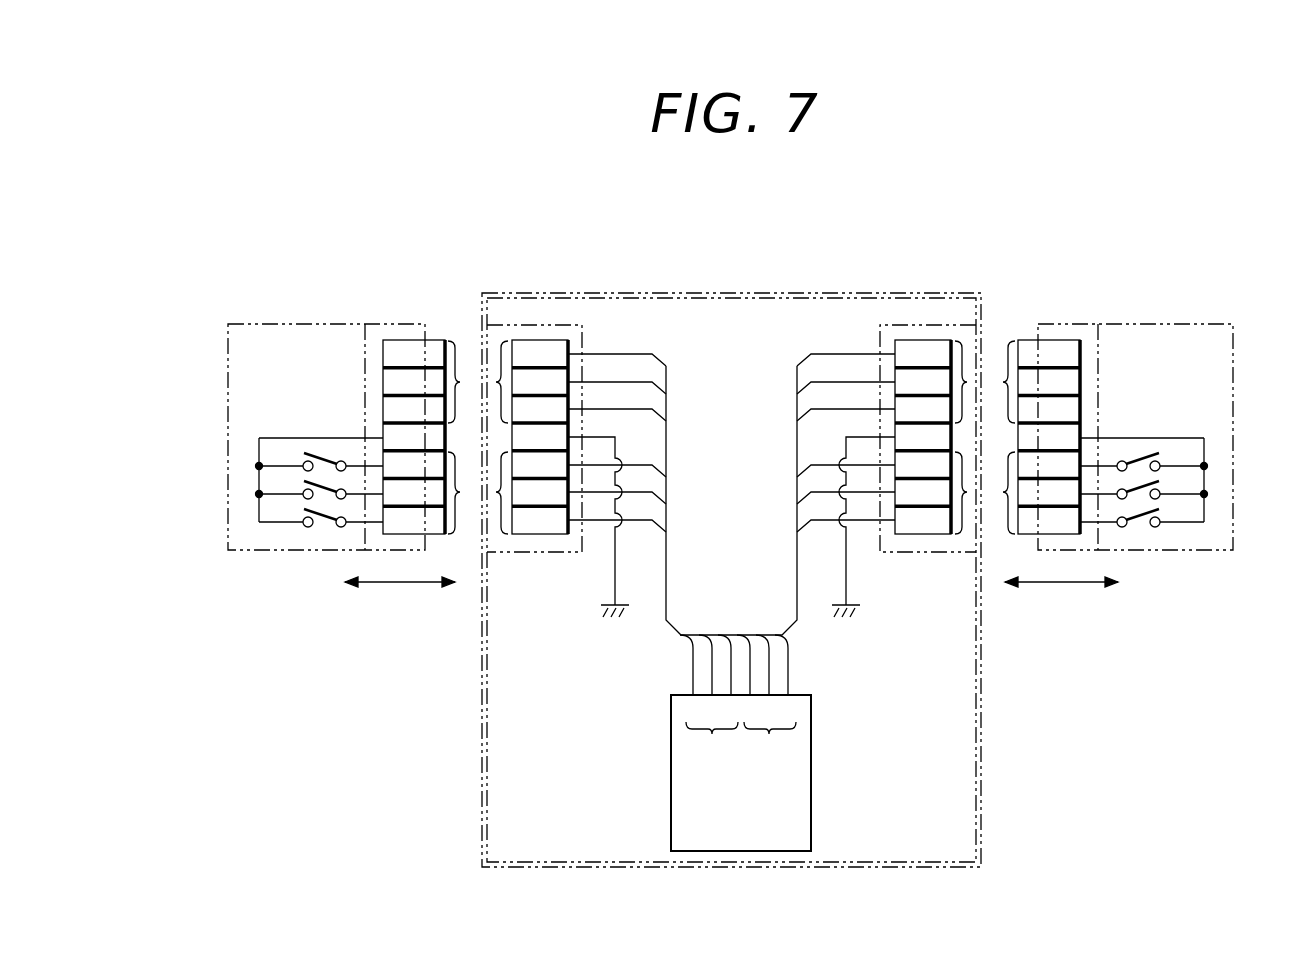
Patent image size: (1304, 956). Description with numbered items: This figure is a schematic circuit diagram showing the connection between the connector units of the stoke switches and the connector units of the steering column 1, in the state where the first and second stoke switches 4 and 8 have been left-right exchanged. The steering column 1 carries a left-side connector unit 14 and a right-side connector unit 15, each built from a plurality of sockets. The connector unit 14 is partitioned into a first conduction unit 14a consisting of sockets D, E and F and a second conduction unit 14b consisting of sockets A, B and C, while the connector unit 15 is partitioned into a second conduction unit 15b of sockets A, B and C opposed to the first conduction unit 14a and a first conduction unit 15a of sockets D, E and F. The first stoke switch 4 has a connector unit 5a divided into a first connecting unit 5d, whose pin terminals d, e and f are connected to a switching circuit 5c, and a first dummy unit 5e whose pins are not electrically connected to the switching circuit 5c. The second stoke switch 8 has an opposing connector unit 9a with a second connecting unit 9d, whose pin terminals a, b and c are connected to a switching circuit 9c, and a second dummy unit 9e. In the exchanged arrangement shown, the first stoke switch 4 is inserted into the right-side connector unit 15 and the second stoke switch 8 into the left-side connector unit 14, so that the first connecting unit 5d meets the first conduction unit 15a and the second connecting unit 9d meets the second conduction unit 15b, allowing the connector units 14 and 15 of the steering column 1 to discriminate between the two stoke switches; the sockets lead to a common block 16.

The steering column 1 is at (776, 286).
The first stoke switch 4 is at (1230, 310).
The connector unit 5a is at (1063, 325).
The switching circuit 5c is at (1135, 537).
The first connecting unit 5d is at (1003, 492).
The first dummy unit 5e is at (1003, 382).
The second stoke switch 8 is at (232, 310).
The connector unit 9a is at (402, 325).
The switching circuit 9c is at (328, 537).
The second connecting unit 9d is at (460, 492).
The second dummy unit 9e is at (460, 382).
The connector unit 14 is at (519, 330).
The first conduction unit 14a is at (496, 382).
The second conduction unit 14b is at (496, 492).
The connector unit 15 is at (938, 330).
The first conduction unit 15a is at (967, 492).
The second conduction unit 15b is at (967, 382).
The controller 16 is at (783, 827).